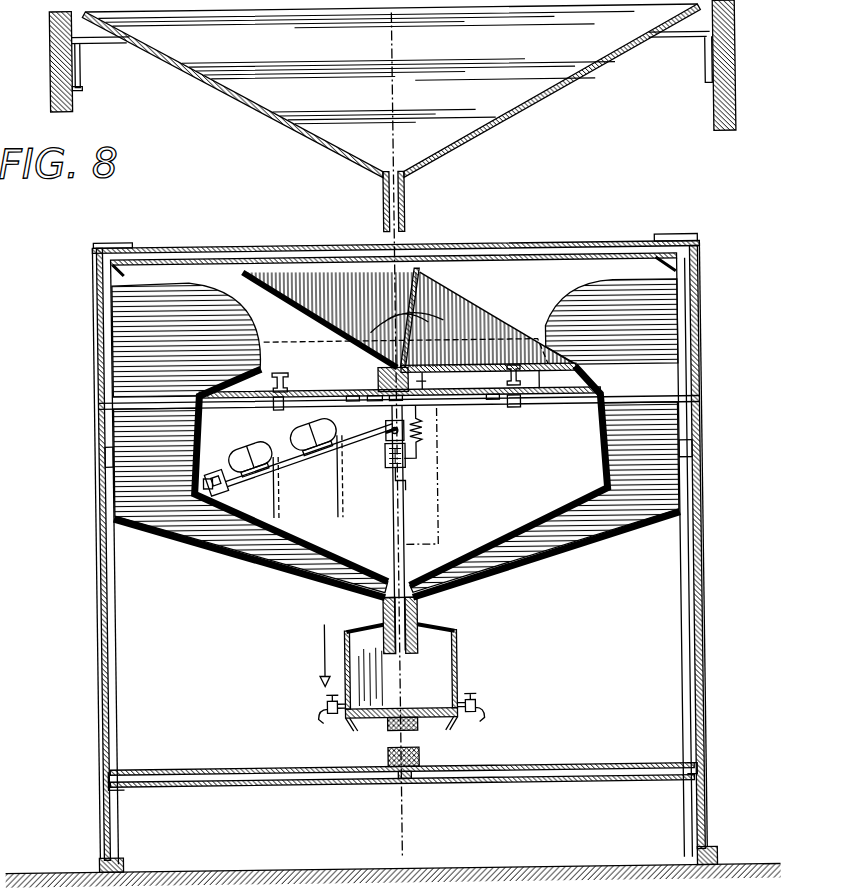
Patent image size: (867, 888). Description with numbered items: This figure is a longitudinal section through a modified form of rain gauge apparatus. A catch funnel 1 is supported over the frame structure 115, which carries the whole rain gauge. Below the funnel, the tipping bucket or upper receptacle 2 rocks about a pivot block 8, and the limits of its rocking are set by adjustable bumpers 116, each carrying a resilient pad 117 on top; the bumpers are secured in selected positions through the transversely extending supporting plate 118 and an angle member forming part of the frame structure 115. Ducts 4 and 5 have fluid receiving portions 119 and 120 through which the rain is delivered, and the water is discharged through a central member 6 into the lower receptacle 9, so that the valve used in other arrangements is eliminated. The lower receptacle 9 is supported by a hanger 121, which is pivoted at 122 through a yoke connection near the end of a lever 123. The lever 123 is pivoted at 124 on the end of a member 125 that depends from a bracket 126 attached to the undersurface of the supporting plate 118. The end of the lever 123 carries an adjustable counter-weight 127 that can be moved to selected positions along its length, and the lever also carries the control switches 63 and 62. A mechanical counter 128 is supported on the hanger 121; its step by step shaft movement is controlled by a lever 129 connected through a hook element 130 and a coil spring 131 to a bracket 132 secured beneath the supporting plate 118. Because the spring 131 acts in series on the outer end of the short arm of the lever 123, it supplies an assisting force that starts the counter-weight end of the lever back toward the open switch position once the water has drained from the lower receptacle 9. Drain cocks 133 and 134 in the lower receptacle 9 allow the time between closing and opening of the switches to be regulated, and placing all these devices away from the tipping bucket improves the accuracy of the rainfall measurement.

The catch funnel 1 is at (482, 108).
The tipping bucket 2 is at (472, 303).
The duct 4 is at (232, 547).
The duct 5 is at (533, 543).
The central member 6 is at (415, 620).
The pivot block 8 is at (380, 377).
The lower receptacle 9 is at (430, 675).
The control switch 62 is at (302, 424).
The control switch 63 is at (242, 446).
The frame structure 115 is at (684, 351).
The adjustable bumpers 116 is at (282, 373).
The resilient pad 117 is at (278, 368).
The transversely extending supporting plate 118 is at (553, 405).
The fluid receiving portion 119 is at (215, 304).
The fluid receiving portion 120 is at (592, 302).
The hanger 121 is at (405, 513).
The pivot 122 is at (387, 458).
The lever 123 is at (345, 499).
The pivot 124 is at (340, 456).
The depending member 125 is at (352, 401).
The bracket 126 is at (339, 379).
The adjustable counter-weight 127 is at (217, 487).
The mechanical counter 128 is at (413, 470).
The actuating lever 129 is at (412, 468).
The hook element 130 is at (423, 422).
The coil spring 131 is at (428, 448).
The bracket 132 is at (441, 397).
The drain cock 133 is at (479, 710).
The drain cock 134 is at (322, 710).